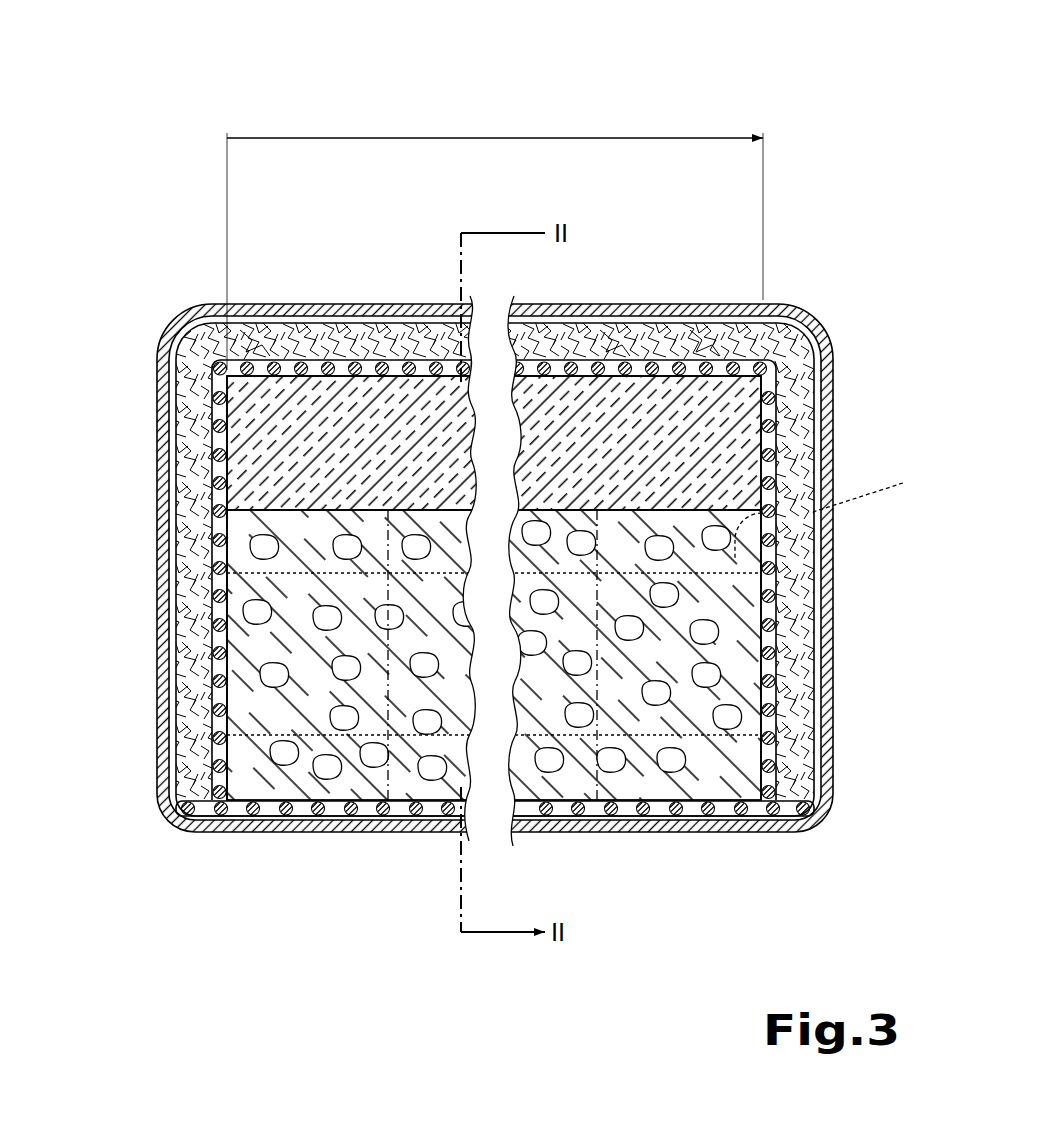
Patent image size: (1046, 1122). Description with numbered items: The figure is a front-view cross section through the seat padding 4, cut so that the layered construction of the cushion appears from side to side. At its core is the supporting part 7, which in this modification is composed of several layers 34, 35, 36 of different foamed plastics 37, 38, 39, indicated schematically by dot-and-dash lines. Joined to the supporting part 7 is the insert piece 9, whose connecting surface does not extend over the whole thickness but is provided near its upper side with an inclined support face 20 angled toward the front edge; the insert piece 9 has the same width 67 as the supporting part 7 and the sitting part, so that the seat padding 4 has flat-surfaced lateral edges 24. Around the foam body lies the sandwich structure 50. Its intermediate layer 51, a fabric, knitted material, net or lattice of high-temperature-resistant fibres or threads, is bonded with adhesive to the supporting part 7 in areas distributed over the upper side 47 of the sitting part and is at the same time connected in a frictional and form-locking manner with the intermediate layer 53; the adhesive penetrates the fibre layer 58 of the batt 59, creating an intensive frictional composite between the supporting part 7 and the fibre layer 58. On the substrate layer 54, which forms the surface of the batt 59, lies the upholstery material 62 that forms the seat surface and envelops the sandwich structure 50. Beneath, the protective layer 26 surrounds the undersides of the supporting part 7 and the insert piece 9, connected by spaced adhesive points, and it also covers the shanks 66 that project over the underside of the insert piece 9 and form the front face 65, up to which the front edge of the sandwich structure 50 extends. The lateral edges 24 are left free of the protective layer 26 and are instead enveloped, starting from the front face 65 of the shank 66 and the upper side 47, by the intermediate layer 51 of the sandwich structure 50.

The seat padding 4 is at (804, 172).
The supporting part 7 is at (257, 645).
The insert piece 9 is at (749, 641).
The support face 20 is at (835, 511).
The lateral edges 24 is at (217, 438).
The protective layer 26 is at (334, 816).
The layer 34 is at (277, 784).
The layer 35 is at (430, 790).
The layer 36 is at (690, 788).
The foamed plastic 37 is at (252, 784).
The foamed plastic 38 is at (528, 784).
The foamed plastic 39 is at (741, 788).
The upper side of the sitting part 47 is at (470, 365).
The sandwich structure 50 is at (165, 820).
The intermediate layer 51 is at (779, 486).
The intermediate layer 53 is at (628, 337).
The substrate layer 54 is at (188, 322).
The fibre layer 58 is at (272, 336).
The batt 59 is at (685, 338).
The upholstery material 62 is at (410, 303).
The front face 65 is at (597, 770).
The shanks 66 is at (582, 783).
The width 67 is at (492, 138).